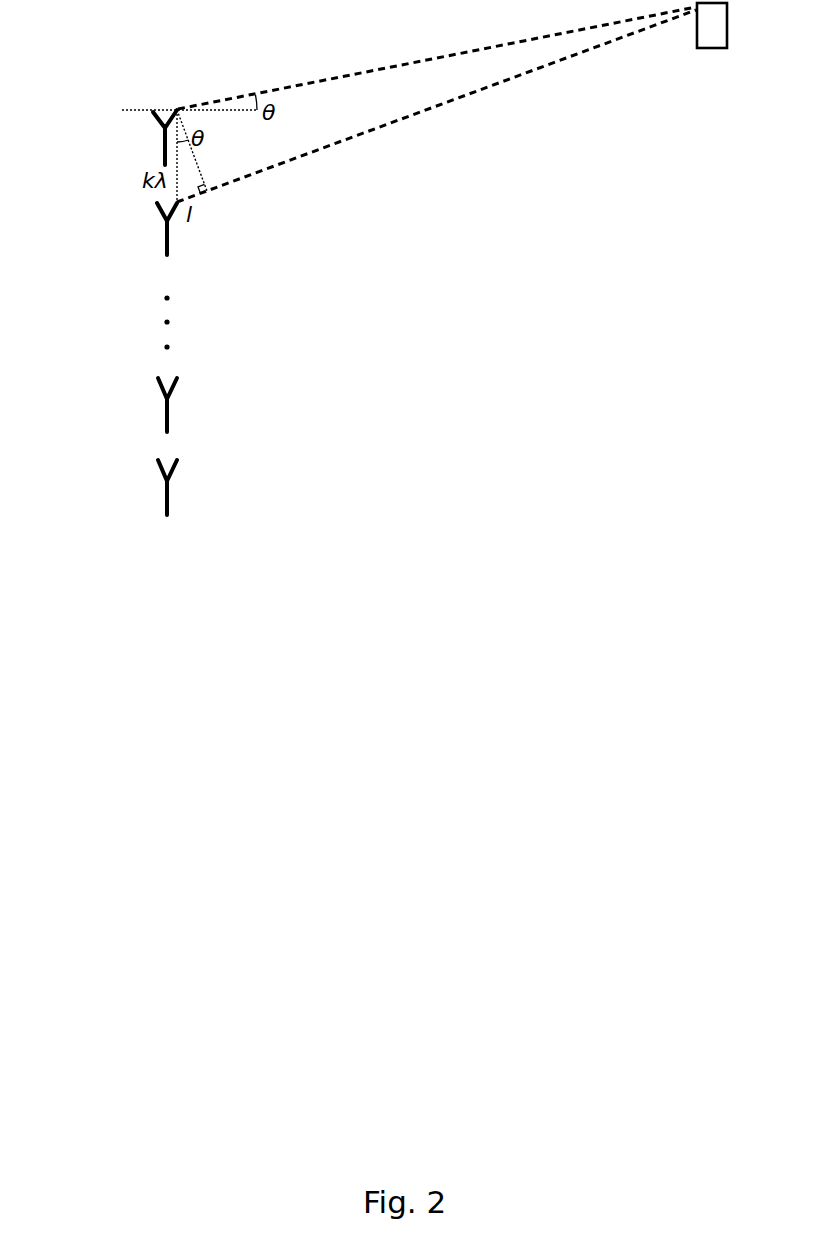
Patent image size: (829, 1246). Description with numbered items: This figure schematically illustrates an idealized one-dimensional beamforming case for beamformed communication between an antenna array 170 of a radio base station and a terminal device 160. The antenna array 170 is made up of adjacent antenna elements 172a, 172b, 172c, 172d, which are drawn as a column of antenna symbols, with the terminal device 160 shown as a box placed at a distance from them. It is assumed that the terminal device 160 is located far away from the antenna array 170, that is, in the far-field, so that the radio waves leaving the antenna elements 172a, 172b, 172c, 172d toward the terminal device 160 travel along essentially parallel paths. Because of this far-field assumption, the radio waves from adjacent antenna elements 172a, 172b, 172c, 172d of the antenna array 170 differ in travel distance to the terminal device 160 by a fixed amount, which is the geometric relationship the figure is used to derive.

The terminal device 160 is at (713, 48).
The antenna array 170 is at (208, 538).
The antenna element 172a is at (156, 121).
The antenna element 172b is at (162, 215).
The antenna element 172c is at (162, 392).
The antenna element 172d is at (162, 482).